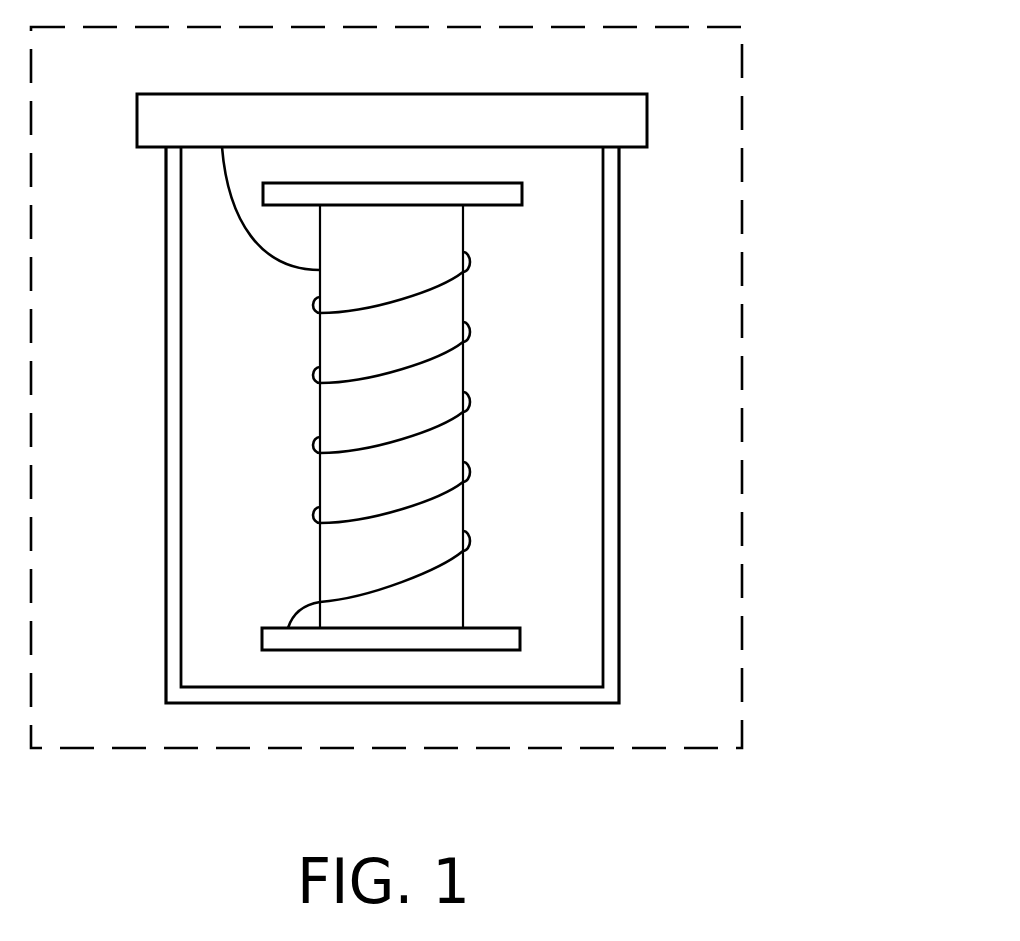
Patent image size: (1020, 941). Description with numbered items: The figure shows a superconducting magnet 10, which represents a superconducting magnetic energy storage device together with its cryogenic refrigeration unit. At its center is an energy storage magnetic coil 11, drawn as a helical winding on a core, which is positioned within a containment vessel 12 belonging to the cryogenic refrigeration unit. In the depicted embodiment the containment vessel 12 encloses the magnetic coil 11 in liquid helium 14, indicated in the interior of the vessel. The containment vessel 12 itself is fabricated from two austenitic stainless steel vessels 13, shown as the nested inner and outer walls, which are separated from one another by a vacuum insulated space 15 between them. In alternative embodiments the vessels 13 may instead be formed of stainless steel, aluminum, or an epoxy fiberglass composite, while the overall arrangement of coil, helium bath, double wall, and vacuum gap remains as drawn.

The superconducting magnet 10 is at (797, 106).
The energy storage magnetic coil 11 is at (470, 399).
The containment vessel 12 is at (406, 425).
The austenitic stainless steel vessels 13 is at (166, 398).
The liquid helium 14 is at (500, 493).
The vacuum insulated space 15 is at (172, 555).